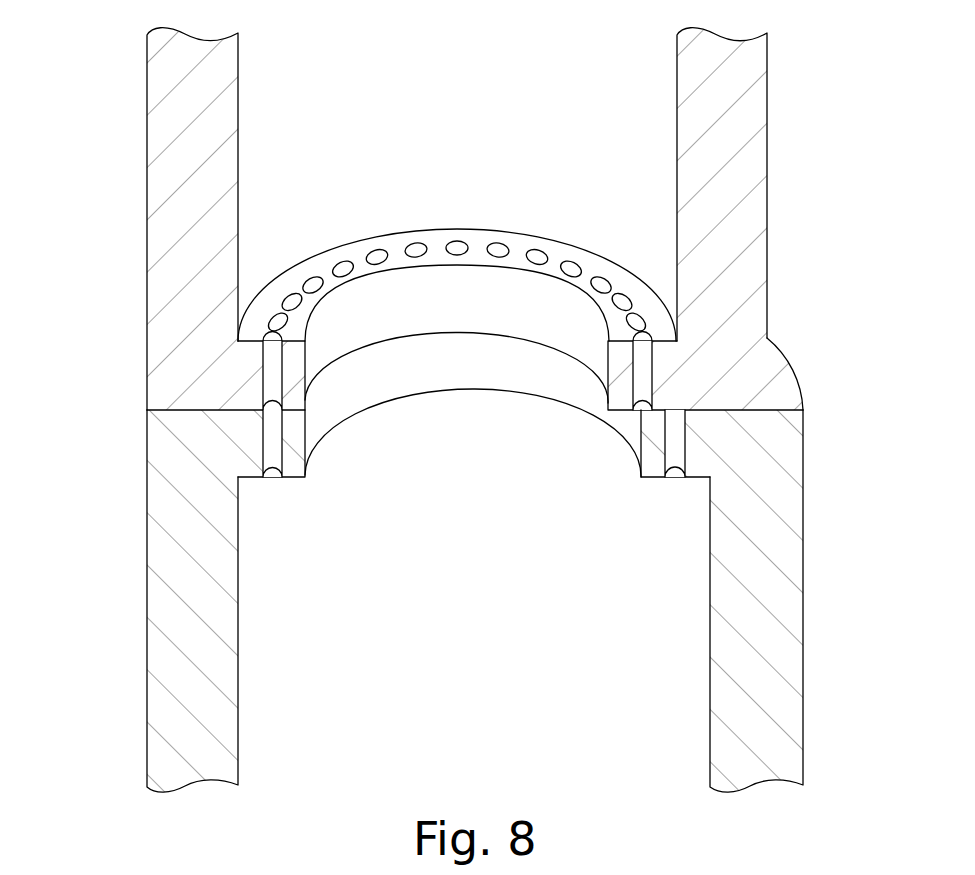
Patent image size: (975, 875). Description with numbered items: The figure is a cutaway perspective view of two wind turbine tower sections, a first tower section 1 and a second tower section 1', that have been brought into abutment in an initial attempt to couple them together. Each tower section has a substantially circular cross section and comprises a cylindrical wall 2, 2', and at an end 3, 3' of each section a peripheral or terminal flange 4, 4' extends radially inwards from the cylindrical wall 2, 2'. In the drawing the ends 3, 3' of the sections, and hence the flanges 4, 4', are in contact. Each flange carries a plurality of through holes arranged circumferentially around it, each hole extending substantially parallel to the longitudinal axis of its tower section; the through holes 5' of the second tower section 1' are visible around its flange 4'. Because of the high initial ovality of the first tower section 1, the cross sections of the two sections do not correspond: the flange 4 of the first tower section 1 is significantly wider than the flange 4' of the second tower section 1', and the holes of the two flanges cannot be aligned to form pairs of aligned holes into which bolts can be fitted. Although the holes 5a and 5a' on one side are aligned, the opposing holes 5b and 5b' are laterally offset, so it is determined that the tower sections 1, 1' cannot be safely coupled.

The first tower section 1 is at (536, 601).
The second tower section 1' is at (537, 219).
The cylindrical wall 2 is at (477, 601).
The cylindrical wall 2' is at (461, 219).
The end 3 is at (565, 407).
The end 3' is at (414, 375).
The flange 4 is at (473, 442).
The flange 4' is at (456, 413).
The through holes 5' is at (457, 231).
The hole 5a is at (163, 460).
The hole 5a' is at (161, 354).
The hole 5b is at (786, 449).
The hole 5b' is at (755, 330).